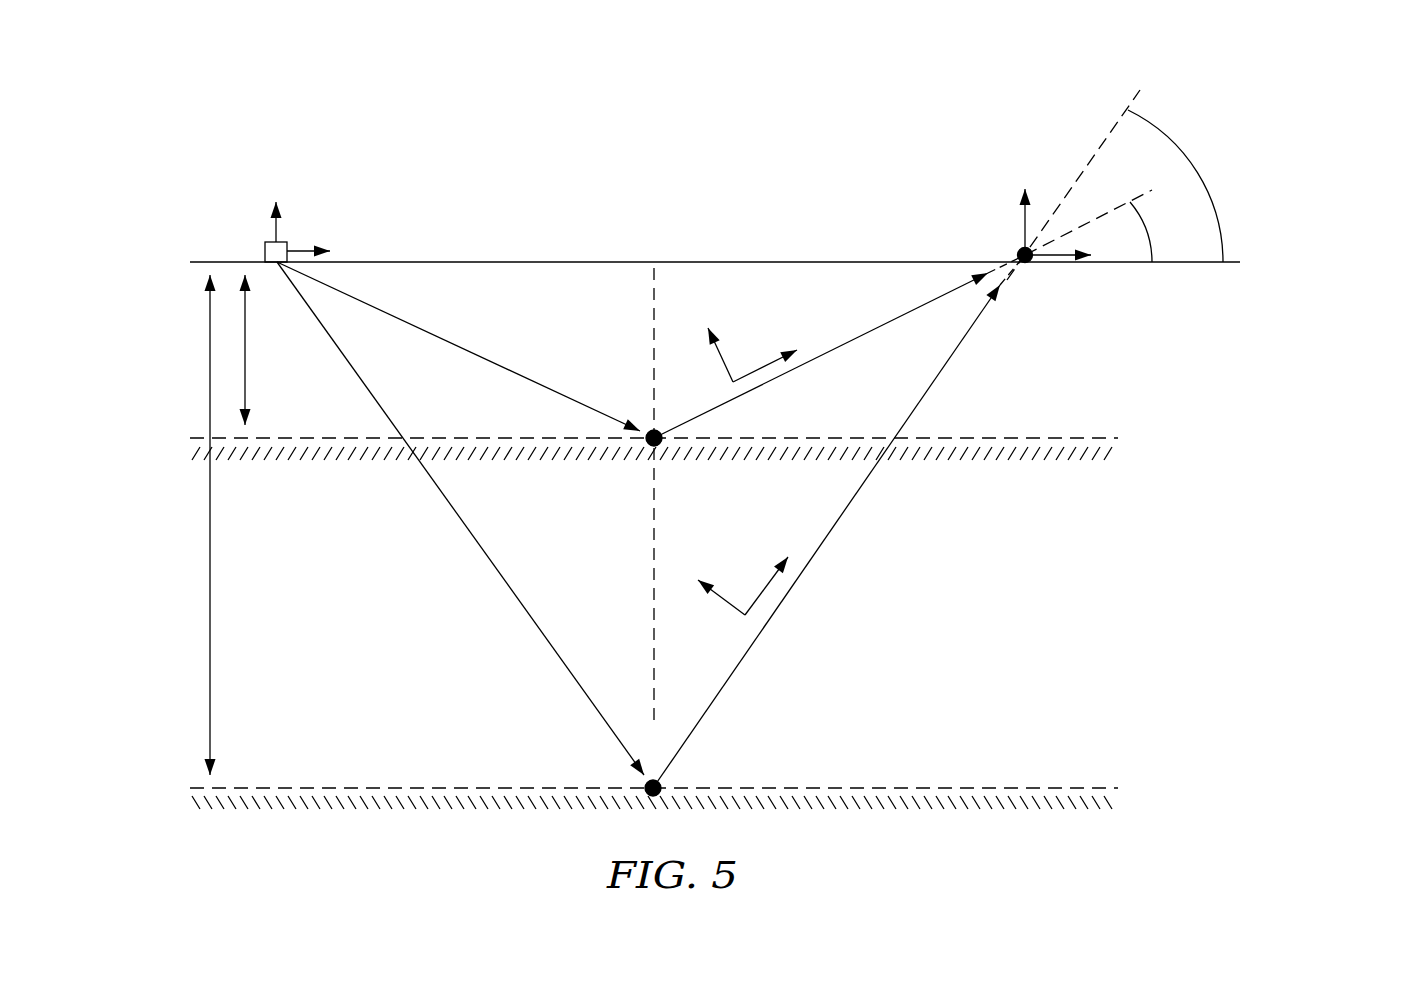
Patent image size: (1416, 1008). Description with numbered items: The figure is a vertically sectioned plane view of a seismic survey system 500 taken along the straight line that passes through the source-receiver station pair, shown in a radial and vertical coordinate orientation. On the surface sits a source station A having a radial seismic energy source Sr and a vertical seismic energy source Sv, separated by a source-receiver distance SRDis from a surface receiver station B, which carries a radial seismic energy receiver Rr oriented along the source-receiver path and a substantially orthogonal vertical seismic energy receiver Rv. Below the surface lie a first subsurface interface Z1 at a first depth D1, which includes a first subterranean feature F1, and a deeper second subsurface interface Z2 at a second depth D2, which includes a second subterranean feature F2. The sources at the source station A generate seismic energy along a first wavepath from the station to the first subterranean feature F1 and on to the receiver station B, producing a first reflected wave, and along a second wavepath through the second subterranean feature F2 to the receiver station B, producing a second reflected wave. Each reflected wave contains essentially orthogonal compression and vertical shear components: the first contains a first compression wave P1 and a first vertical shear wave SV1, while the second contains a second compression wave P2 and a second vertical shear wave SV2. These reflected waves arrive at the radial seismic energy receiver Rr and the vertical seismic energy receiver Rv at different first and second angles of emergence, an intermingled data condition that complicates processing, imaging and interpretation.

The seismic survey system 500 is at (794, 449).
The source station A is at (262, 247).
The surface receiver station B is at (1014, 245).
The vertical seismic energy source Sv is at (278, 205).
The radial seismic energy source Sr is at (326, 250).
The vertical seismic energy receiver Rv is at (1023, 203).
The radial seismic energy receiver Rr is at (1080, 242).
The source-receiver distance SRDis is at (658, 476).
The first subterranean feature F1 is at (471, 354).
The second subterranean feature F2 is at (472, 529).
The first subsurface interface Z1 is at (654, 433).
The second subsurface interface Z2 is at (654, 782).
The first depth D1 is at (262, 350).
The second depth D2 is at (234, 525).
The first compression wave P1 is at (839, 346).
The second compression wave P2 is at (839, 521).
The first vertical shear wave SV1 is at (709, 342).
The second vertical shear wave SV2 is at (711, 584).